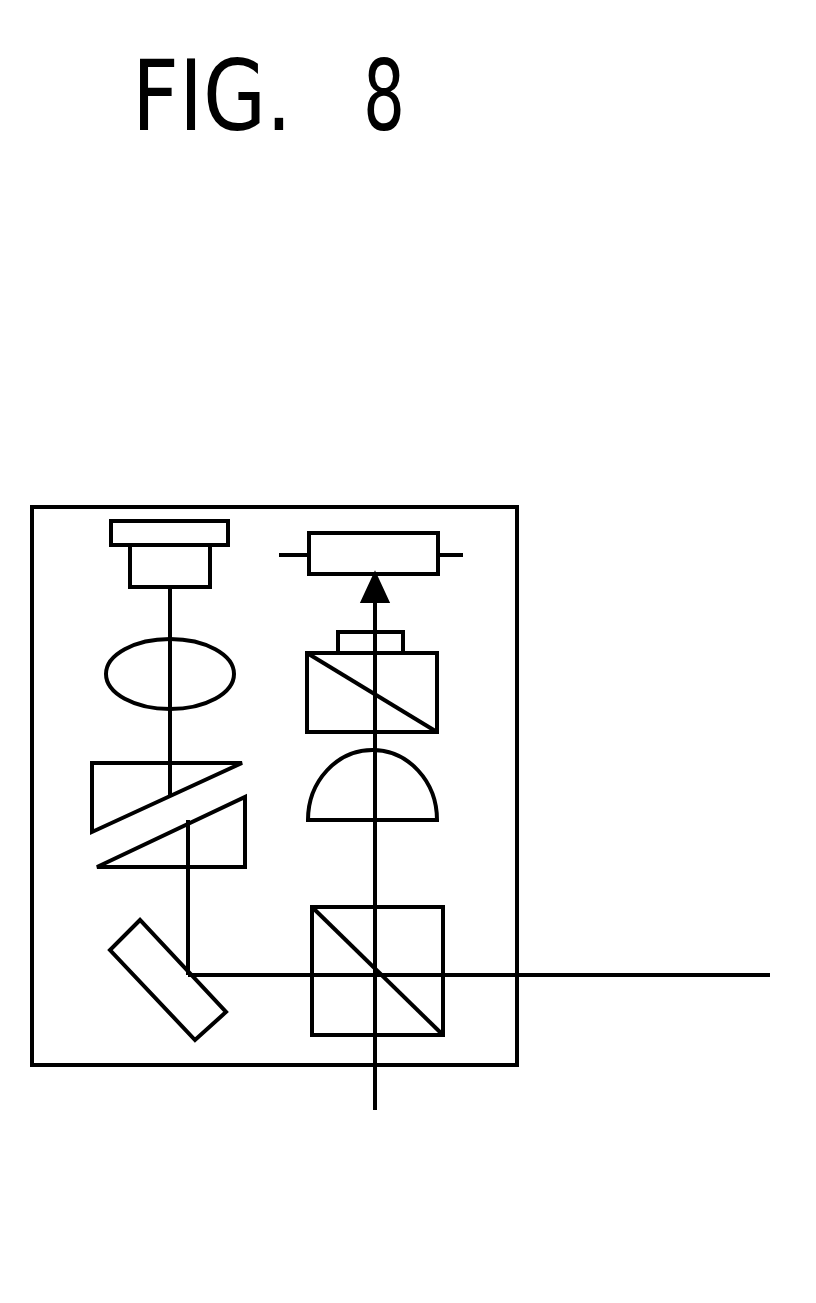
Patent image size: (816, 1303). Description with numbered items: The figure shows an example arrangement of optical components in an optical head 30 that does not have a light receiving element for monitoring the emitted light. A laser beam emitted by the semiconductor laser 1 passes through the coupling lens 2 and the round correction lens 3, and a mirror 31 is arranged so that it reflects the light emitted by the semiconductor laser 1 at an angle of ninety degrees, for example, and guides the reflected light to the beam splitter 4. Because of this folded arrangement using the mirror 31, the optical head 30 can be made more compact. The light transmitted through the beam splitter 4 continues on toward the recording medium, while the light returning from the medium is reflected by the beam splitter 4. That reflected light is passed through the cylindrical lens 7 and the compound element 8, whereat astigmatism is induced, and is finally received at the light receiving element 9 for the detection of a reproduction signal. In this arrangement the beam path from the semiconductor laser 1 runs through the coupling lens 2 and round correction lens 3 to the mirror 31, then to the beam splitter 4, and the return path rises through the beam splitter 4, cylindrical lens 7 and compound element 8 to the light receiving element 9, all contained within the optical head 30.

The semiconductor laser 1 is at (147, 615).
The coupling lens 2 is at (139, 665).
The round correction lens 3 is at (152, 869).
The beam splitter 4 is at (399, 855).
The cylindrical lens 7 is at (399, 796).
The compound element 8 is at (390, 682).
The light receiving element 9 is at (371, 518).
The optical head 30 is at (300, 744).
The mirror 31 is at (409, 980).